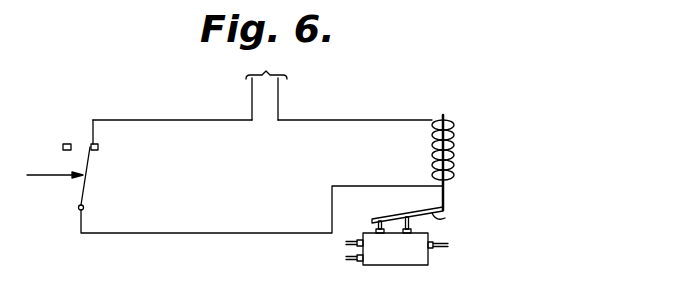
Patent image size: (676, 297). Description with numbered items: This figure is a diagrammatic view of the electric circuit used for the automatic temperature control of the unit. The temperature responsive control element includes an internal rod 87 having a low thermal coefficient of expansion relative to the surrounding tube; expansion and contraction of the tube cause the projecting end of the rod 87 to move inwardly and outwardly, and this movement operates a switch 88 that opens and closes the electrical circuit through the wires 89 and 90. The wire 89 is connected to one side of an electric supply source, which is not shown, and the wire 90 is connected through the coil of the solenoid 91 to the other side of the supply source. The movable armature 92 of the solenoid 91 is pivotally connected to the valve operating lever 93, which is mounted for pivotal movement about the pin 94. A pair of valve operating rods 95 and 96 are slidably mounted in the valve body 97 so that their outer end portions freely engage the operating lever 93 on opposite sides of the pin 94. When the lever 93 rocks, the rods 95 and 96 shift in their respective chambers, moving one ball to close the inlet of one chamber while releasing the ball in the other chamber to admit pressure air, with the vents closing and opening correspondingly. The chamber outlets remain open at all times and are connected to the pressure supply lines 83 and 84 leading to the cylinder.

The pressure supply line 83 is at (347, 243).
The pressure supply line 84 is at (448, 250).
The internal rod 87 is at (55, 163).
The switch 88 is at (88, 165).
The wire 89 is at (148, 120).
The wire 90 is at (152, 233).
The solenoid 91 is at (455, 150).
The movable armature 92 is at (445, 200).
The valve operating lever 93 is at (445, 218).
The pin 94 is at (393, 217).
The valve operating rod 95 is at (372, 221).
The valve operating rod 96 is at (412, 223).
The valve body 97 is at (413, 265).